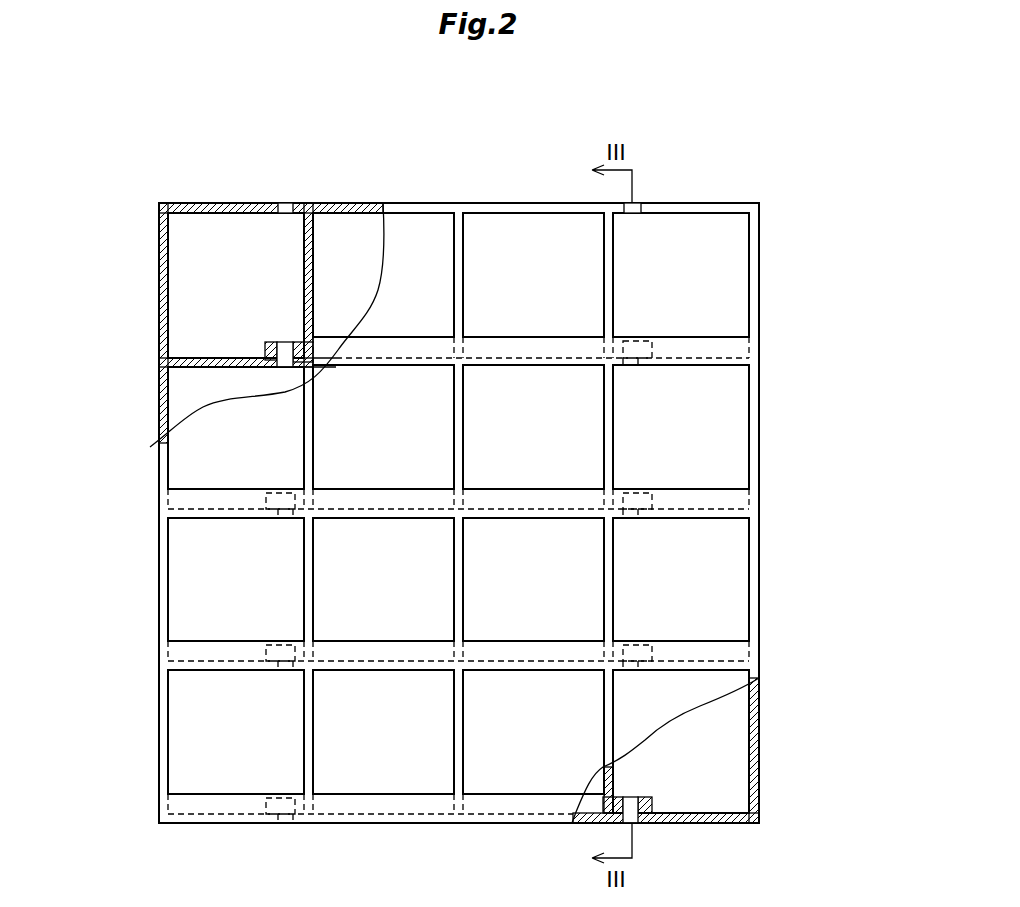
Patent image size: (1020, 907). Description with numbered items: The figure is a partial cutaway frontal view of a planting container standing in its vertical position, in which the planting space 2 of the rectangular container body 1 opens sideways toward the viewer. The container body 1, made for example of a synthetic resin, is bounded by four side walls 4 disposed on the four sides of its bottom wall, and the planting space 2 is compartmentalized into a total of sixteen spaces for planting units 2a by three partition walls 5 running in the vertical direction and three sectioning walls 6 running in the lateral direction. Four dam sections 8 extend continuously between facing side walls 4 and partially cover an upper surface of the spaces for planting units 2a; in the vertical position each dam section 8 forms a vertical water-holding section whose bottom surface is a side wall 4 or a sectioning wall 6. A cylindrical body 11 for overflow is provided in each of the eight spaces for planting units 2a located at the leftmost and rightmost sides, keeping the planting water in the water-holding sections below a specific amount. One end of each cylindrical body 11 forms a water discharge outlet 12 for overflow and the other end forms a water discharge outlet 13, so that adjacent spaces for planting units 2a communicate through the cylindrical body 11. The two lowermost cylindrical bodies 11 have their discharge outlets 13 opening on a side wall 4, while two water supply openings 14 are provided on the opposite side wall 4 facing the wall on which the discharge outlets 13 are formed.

The container body 1 is at (753, 179).
The planting space 2 is at (467, 516).
The space for planting unit 2a is at (425, 230).
The side wall 4 is at (410, 203).
The partition wall 5 is at (303, 240).
The sectioning wall 6 is at (522, 352).
The dam section 8 is at (732, 347).
The cylindrical body for overflow 11 is at (265, 351).
The water discharge outlet for overflow 12 is at (286, 341).
The water discharge outlet 13 is at (290, 368).
The water supply opening 14 is at (288, 203).